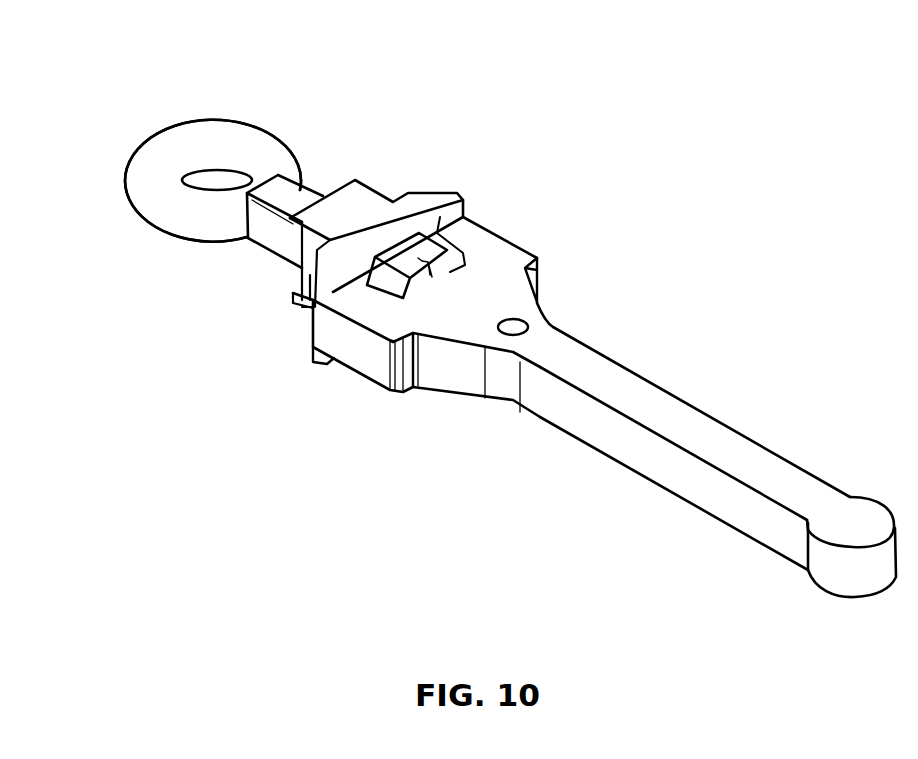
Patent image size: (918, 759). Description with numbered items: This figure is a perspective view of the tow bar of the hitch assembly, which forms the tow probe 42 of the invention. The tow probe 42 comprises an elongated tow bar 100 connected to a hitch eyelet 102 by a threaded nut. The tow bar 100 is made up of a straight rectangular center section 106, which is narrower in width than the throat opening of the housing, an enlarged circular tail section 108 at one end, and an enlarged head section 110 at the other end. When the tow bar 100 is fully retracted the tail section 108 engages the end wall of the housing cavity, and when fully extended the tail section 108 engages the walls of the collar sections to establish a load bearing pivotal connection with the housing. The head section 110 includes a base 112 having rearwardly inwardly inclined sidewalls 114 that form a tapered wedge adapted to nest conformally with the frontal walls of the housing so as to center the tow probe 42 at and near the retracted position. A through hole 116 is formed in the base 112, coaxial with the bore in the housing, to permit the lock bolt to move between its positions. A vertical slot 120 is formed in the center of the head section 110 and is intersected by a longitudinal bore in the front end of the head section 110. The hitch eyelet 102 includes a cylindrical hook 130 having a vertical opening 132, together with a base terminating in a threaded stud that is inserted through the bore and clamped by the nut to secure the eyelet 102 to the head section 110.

The tow probe 42 is at (718, 309).
The tow bar 100 is at (789, 432).
The hitch eyelet 102 is at (128, 197).
The center section 106 is at (637, 448).
The tail section 108 is at (855, 580).
The head section 110 is at (337, 363).
The base 112 is at (493, 248).
The sidewalls 114 is at (538, 302).
The through hole 116 is at (520, 332).
The vertical slot 120 is at (462, 252).
The cylindrical hook 130 is at (300, 152).
The vertical opening 132 is at (238, 178).